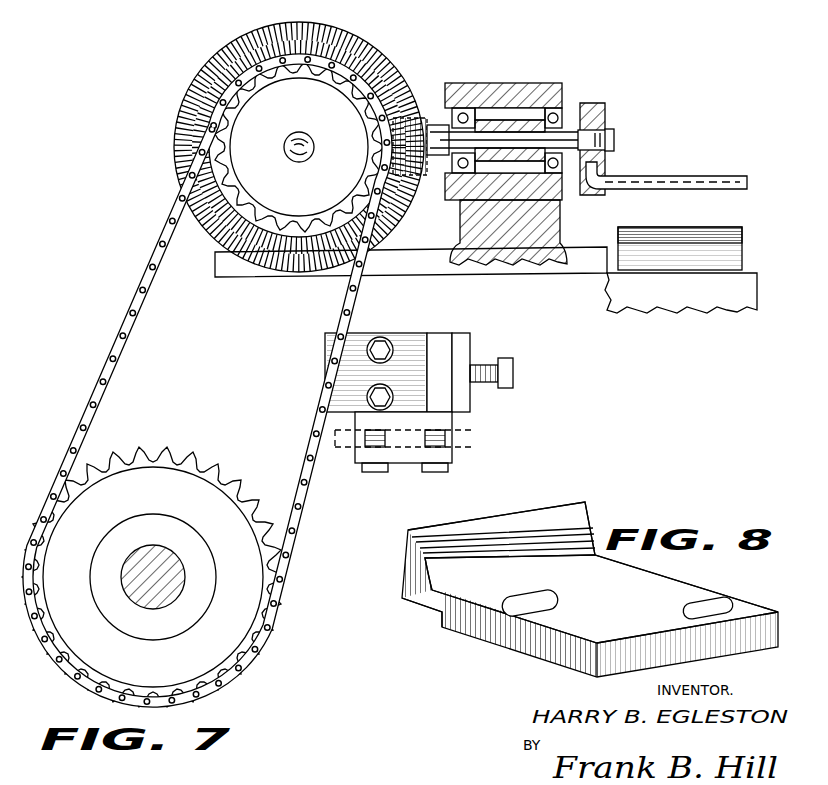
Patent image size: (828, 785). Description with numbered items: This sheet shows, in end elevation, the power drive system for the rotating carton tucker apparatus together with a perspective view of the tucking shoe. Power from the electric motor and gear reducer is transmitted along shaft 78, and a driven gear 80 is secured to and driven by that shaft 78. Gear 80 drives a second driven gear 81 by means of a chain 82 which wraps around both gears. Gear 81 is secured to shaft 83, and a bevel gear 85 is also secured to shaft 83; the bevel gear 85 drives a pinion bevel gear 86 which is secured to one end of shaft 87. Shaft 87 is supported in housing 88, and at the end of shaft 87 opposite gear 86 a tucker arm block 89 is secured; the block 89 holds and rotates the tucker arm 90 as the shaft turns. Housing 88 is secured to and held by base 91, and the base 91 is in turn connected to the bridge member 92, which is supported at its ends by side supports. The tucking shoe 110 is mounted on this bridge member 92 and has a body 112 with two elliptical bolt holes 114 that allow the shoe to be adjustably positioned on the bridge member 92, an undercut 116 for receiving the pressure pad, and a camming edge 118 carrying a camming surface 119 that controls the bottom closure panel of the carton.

In FIG. 7, the shaft 78 is at (140, 572).
In FIG. 7, the driven gear 80 is at (183, 462).
In FIG. 7, the driven gear 81 is at (217, 242).
In FIG. 7, the chain 82 is at (163, 237).
In FIG. 7, the shaft 83 is at (290, 140).
In FIG. 7, the bevel gear 85 is at (182, 107).
In FIG. 7, the pinion bevel gear 86 is at (417, 95).
In FIG. 7, the shaft 87 is at (614, 137).
In FIG. 7, the housing 88 is at (500, 88).
In FIG. 7, the tucker arm block 89 is at (600, 110).
In FIG. 7, the tucker arm 90 is at (655, 176).
In FIG. 7, the base 91 is at (435, 262).
In FIG. 7, the bridge member 92 is at (603, 296).
In FIG. 7, the tucking shoe 110 is at (714, 218).
In FIG. 8, the tucking shoe 110 is at (452, 639).
In FIG. 8, the body 112 is at (655, 588).
In FIG. 8, the elliptical bolt holes 114 is at (535, 606).
In FIG. 8, the undercut 116 is at (412, 603).
In FIG. 8, the camming edge 118 is at (408, 562).
In FIG. 7, the camming surface 119 is at (742, 232).
In FIG. 8, the camming surface 119 is at (405, 535).